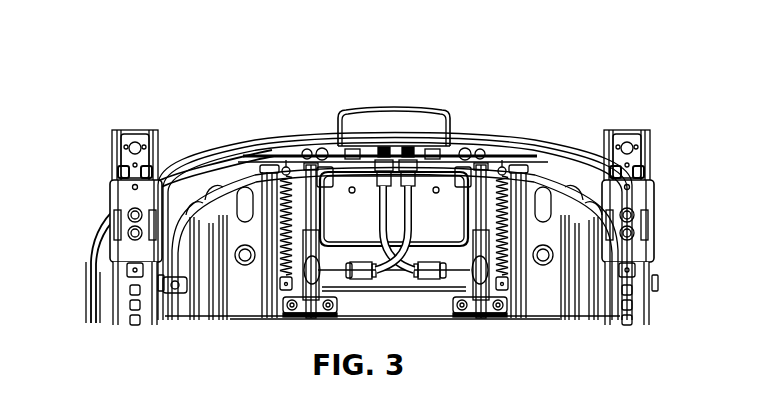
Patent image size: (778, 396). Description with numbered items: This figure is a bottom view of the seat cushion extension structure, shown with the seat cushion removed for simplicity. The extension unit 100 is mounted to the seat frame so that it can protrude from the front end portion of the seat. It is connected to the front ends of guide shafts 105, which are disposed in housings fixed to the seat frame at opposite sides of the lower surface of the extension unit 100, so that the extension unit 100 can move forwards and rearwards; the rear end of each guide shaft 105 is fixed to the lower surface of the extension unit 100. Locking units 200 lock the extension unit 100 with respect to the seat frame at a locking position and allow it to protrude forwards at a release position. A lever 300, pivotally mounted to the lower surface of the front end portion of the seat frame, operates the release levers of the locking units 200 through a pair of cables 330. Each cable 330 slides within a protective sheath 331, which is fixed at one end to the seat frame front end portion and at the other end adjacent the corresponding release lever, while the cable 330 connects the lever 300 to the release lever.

The extension unit 100 is at (563, 143).
The guide shaft 105 is at (480, 200).
The locking unit 200 is at (278, 215).
The lever 300 is at (103, 245).
The cable 330 is at (398, 171).
The protective sheath 331 is at (375, 213).